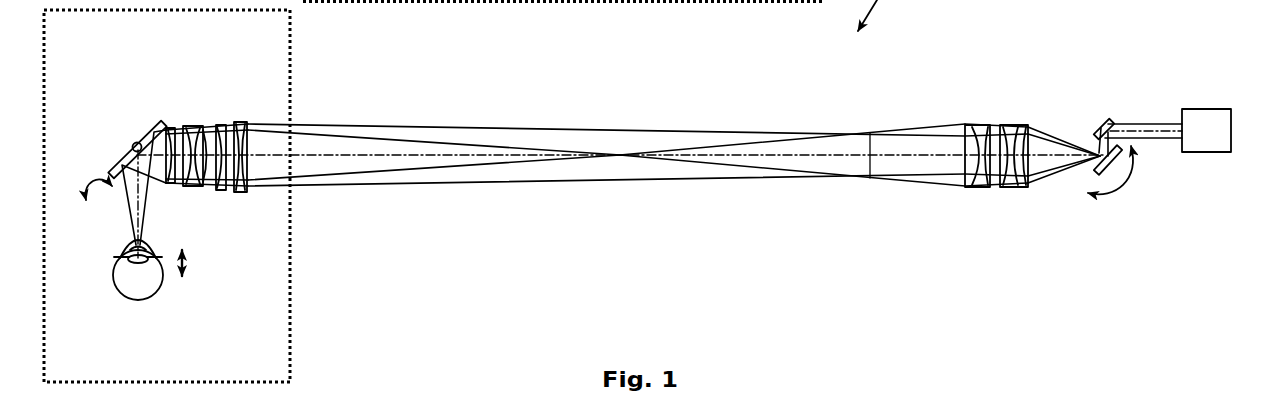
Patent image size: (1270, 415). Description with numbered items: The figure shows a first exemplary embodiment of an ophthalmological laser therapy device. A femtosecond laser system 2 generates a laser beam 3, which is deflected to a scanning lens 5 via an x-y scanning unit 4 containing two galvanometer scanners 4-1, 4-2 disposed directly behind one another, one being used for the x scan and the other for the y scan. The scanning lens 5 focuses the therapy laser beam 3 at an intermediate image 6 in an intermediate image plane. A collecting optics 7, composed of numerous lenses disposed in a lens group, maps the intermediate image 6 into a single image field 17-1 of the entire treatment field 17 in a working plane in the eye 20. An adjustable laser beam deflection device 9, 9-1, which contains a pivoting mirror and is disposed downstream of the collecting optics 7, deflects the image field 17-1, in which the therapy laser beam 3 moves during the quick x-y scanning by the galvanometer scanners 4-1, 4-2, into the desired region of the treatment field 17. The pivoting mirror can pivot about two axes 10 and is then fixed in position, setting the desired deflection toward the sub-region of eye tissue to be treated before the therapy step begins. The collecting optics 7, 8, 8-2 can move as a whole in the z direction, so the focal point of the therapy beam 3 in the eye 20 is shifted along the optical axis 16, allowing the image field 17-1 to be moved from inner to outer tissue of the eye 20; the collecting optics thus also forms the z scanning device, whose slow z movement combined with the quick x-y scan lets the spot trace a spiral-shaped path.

The femtosecond laser system 2 is at (1221, 107).
The laser beam 3 is at (156, 238).
The x-y scanning unit 4 is at (1142, 148).
The galvanometer scanner 4-1 is at (1107, 119).
The galvanometer scanner 4-2 is at (1114, 171).
The scanning lens 5 is at (962, 114).
The intermediate image 6 is at (876, 133).
The collecting optics 7 is at (218, 129).
The collecting optics 8 is at (218, 129).
The collecting optics 8-2 is at (172, 113).
The adjustable laser beam deflection device 9 is at (148, 89).
The pivoting mirror 9-1 is at (146, 143).
The axes 10 is at (101, 172).
The optical axis 16 is at (378, 157).
The treatment field 17 is at (232, 263).
The image field 17-1 is at (232, 263).
The eye 20 is at (148, 304).